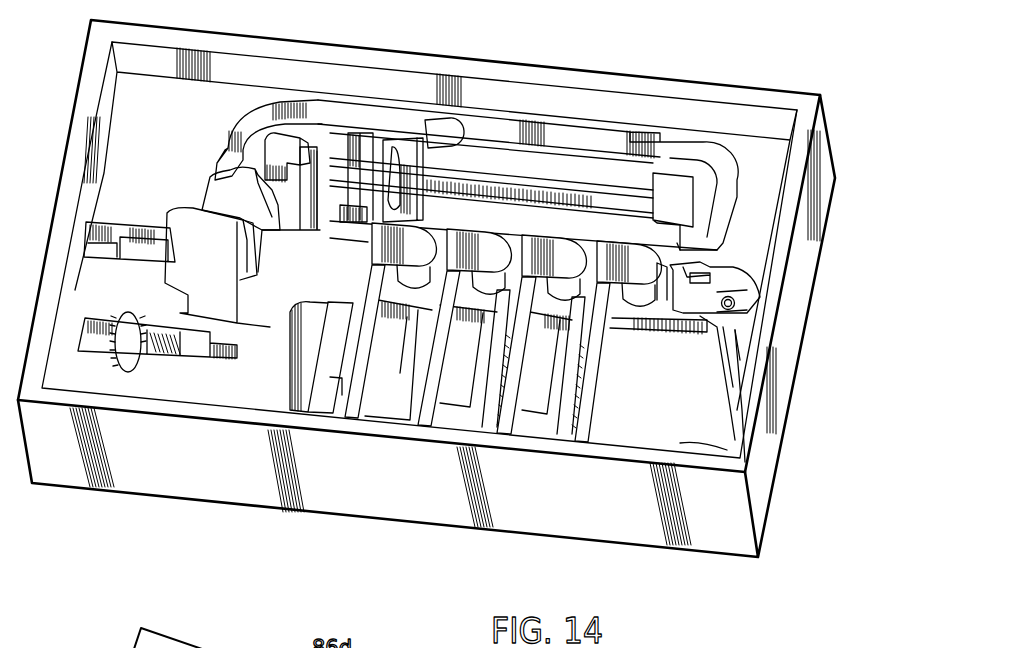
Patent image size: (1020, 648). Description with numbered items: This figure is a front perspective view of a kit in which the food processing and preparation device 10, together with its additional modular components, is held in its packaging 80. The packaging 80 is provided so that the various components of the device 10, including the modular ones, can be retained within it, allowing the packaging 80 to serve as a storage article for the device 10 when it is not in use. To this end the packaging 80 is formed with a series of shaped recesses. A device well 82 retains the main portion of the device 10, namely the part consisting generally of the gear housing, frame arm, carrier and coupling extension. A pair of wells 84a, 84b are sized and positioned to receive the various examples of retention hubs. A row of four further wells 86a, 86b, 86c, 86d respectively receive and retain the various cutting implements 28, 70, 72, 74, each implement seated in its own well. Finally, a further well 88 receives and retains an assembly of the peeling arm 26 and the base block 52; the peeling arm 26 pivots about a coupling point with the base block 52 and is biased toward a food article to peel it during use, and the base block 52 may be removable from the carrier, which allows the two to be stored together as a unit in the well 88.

The packaging 80 is at (426, 288).
The device 10 is at (500, 157).
The device well 82 is at (412, 113).
The base block 52 is at (745, 272).
The further well 88 is at (740, 350).
The peeling arm 26 is at (738, 395).
The well 84a is at (162, 368).
The well 84b is at (268, 393).
The well 86a is at (347, 408).
The well 86b is at (418, 427).
The well 86c is at (497, 440).
The well 86d is at (578, 437).
The cutting implement 28 is at (367, 333).
The cutting implement 70 is at (443, 350).
The cutting implement 72 is at (513, 363).
The cutting implement 74 is at (587, 370).